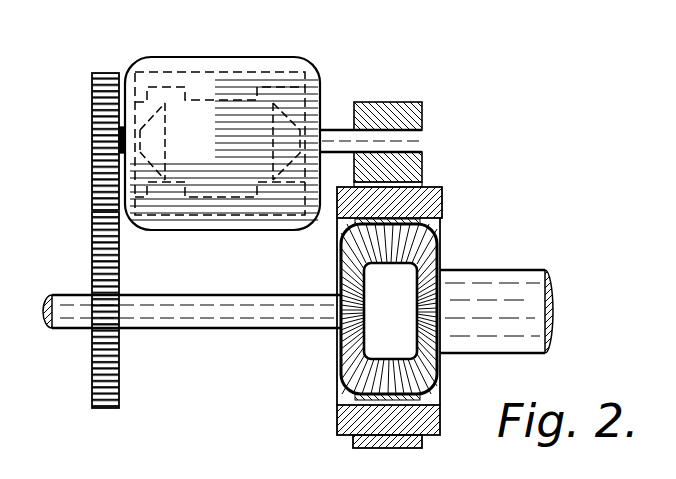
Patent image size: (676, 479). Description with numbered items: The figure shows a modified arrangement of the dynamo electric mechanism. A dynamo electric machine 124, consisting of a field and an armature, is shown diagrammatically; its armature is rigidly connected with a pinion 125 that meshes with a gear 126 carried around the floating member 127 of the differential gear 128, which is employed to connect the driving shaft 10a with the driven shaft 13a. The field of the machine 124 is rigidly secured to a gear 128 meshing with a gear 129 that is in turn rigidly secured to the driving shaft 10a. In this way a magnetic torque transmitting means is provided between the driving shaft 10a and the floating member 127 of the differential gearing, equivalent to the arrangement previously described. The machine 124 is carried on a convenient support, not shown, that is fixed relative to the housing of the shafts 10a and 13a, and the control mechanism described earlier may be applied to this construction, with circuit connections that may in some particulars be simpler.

The dynamo electric machine 124 is at (258, 47).
The gear 128 is at (92, 102).
The gear 129 is at (92, 266).
The driving shaft 10a is at (246, 295).
The pinion 125 is at (422, 108).
The gear 126 is at (420, 186).
The floating member 127 is at (441, 202).
The driven shaft 13a is at (542, 272).